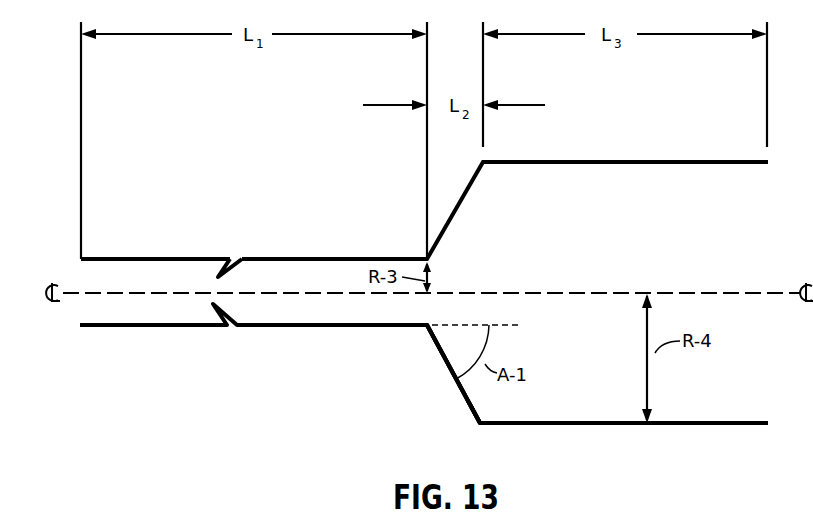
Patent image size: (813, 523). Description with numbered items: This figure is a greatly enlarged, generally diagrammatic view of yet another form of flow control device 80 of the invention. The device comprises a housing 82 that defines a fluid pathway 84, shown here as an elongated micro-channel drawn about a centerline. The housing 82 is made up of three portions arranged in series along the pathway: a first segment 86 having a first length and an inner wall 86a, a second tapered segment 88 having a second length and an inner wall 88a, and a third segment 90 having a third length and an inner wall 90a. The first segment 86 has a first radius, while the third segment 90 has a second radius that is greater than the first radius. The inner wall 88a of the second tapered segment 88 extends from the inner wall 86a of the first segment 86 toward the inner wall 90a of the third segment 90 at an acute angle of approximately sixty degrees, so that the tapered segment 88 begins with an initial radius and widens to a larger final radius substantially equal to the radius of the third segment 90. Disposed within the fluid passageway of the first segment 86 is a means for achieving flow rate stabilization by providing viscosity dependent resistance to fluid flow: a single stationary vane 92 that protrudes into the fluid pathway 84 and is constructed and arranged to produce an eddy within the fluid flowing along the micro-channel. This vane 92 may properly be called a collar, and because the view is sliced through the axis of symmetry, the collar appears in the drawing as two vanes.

The flow control device 80 is at (350, 372).
The housing 82 is at (465, 397).
The fluid pathway 84 is at (85, 289).
The first segment 86 is at (176, 258).
The inner wall of first segment 86a is at (283, 260).
The second tapered segment 88 is at (443, 361).
The inner wall of second tapered segment 88a is at (478, 411).
The third segment 90 is at (623, 425).
The inner wall of third segment 90a is at (670, 423).
The stationary vane 92 is at (212, 258).